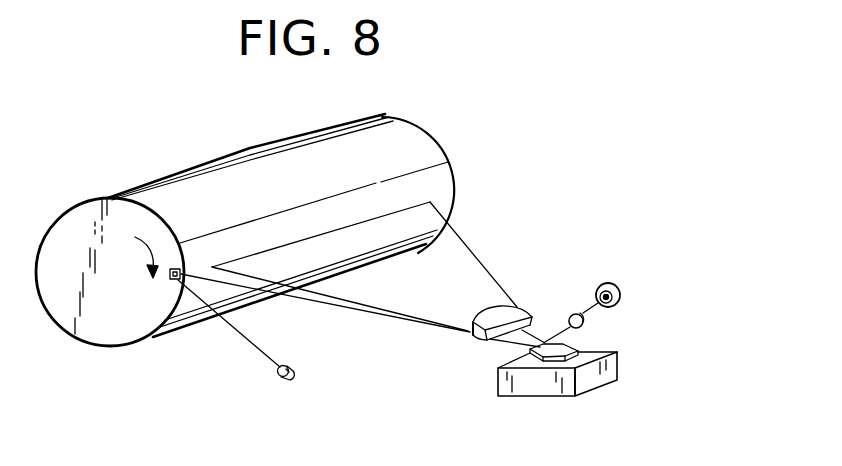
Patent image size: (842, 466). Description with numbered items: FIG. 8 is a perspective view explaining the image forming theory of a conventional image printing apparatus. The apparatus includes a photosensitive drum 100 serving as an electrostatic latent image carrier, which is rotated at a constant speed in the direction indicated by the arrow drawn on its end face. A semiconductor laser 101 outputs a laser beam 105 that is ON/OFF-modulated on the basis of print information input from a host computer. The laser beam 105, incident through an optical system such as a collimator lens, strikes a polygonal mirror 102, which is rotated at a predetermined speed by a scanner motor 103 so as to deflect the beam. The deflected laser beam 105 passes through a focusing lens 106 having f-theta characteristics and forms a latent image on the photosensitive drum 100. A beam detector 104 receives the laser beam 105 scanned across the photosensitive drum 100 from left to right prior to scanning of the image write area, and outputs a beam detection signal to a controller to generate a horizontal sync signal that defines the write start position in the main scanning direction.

The photosensitive drum 100 is at (452, 163).
The semiconductor laser 101 is at (620, 287).
The polygonal mirror 102 is at (572, 345).
The scanner motor 103 is at (618, 367).
The beam detector 104 is at (296, 373).
The laser beam 105 is at (465, 243).
The focusing lens 106 is at (519, 307).